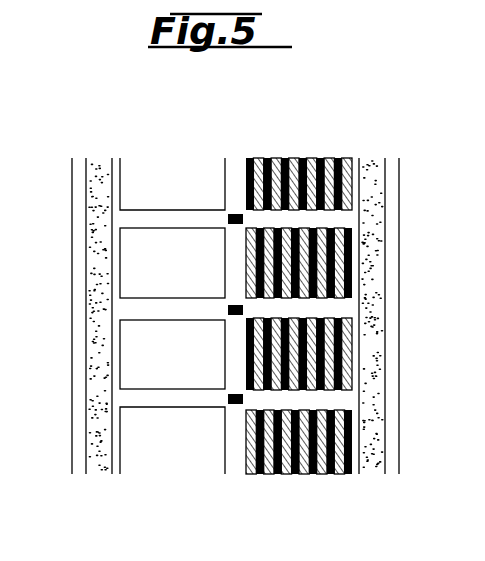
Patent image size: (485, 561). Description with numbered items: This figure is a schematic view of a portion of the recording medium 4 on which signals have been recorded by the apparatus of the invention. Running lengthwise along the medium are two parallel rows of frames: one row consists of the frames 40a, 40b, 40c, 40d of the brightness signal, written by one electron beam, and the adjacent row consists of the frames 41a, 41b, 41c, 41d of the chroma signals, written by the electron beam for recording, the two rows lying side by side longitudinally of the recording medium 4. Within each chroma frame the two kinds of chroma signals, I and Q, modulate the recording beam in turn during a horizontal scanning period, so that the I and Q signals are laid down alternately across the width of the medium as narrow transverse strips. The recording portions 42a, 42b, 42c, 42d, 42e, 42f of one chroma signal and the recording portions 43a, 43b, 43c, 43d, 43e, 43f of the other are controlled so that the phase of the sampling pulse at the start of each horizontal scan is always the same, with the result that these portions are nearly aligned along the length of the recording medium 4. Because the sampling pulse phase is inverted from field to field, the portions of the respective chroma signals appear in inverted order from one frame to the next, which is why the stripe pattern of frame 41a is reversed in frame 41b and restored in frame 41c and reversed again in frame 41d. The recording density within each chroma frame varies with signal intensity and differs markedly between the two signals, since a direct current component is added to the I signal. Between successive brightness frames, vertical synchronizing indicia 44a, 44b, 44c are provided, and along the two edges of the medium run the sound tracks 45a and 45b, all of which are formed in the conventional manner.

The recording medium 4 is at (72, 193).
The frame of the brightness signal 40a is at (172, 184).
The frame of the brightness signal 40b is at (172, 263).
The frame of the brightness signal 40c is at (172, 354).
The frame of the brightness signal 40d is at (172, 440).
The frame of the chroma signals 41a is at (338, 164).
The frame of the chroma signals 41b is at (352, 283).
The frame of the chroma signals 41c is at (352, 370).
The frame of the chroma signals 41d is at (338, 469).
The recording portion of a chroma signal 42a is at (247, 174).
The recording portion of a chroma signal 42b is at (276, 158).
The recording portion of a chroma signal 42c is at (290, 174).
The recording portion of a chroma signal 42d is at (311, 158).
The recording portion of a chroma signal 42e is at (336, 174).
The recording portion of a chroma signal 42f is at (347, 158).
The recording portion of a chroma signal 43a is at (251, 474).
The recording portion of a chroma signal 43b is at (269, 474).
The recording portion of a chroma signal 43c is at (286, 474).
The recording portion of a chroma signal 43d is at (304, 474).
The recording portion of a chroma signal 43e is at (322, 474).
The recording portion of a chroma signal 43f is at (340, 474).
The vertical synchronizing indicium 44a is at (228, 218).
The vertical synchronizing indicium 44b is at (228, 310).
The vertical synchronizing indicium 44c is at (228, 399).
The sound track 45a is at (92, 274).
The sound track 45b is at (378, 250).